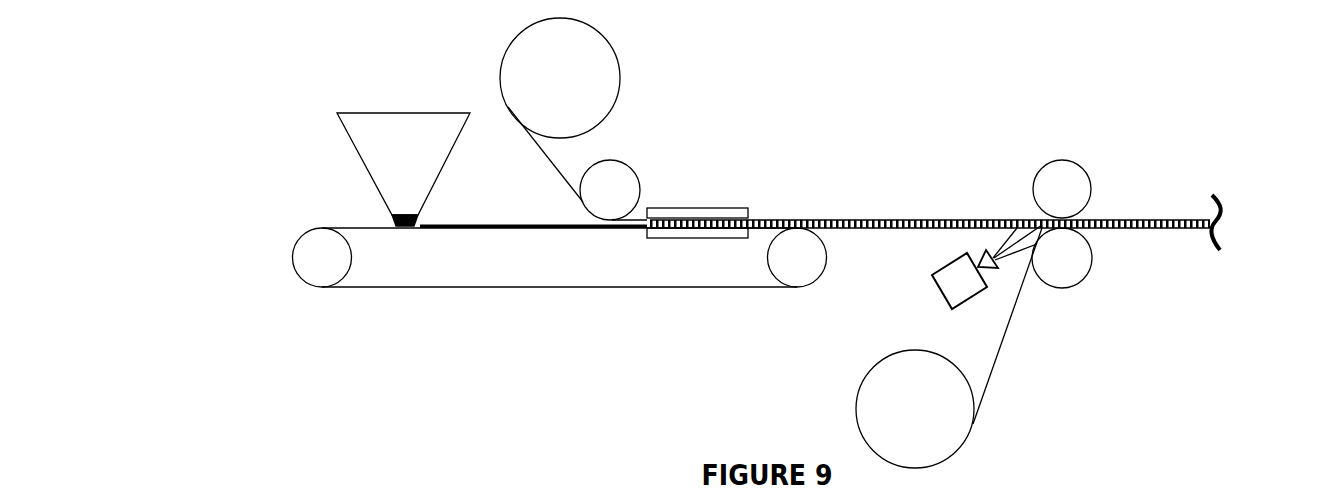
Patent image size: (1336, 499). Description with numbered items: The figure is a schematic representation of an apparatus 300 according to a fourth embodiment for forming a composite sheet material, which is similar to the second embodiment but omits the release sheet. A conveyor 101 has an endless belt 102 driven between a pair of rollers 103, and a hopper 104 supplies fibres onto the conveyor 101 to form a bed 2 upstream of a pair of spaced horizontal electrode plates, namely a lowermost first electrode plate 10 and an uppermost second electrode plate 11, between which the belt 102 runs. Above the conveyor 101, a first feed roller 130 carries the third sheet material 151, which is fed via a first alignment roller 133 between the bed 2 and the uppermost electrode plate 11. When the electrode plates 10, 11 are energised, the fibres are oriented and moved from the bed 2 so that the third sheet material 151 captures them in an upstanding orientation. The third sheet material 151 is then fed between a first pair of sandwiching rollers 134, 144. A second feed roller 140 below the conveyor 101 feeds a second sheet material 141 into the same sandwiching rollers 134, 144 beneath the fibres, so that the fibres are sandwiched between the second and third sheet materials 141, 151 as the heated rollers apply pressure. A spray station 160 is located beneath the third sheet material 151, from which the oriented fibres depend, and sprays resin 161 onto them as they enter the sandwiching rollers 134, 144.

The apparatus 300 is at (228, 84).
The conveyor 101 is at (375, 350).
The endless belt 102 is at (558, 287).
The rollers 103 is at (318, 263).
The hopper 104 is at (384, 173).
The bed 2 is at (478, 224).
The first feed roller 130 is at (538, 92).
The third sheet material 151 is at (547, 155).
The first alignment roller 133 is at (587, 196).
The second electrode plate 11 is at (727, 208).
The first electrode plate 10 is at (688, 238).
The sandwiching roller 134 is at (1078, 193).
The sandwiching roller 144 is at (1075, 260).
The spray station 160 is at (957, 302).
The resin 161 is at (1007, 241).
The second feed roller 140 is at (894, 424).
The second sheet material 141 is at (1000, 348).